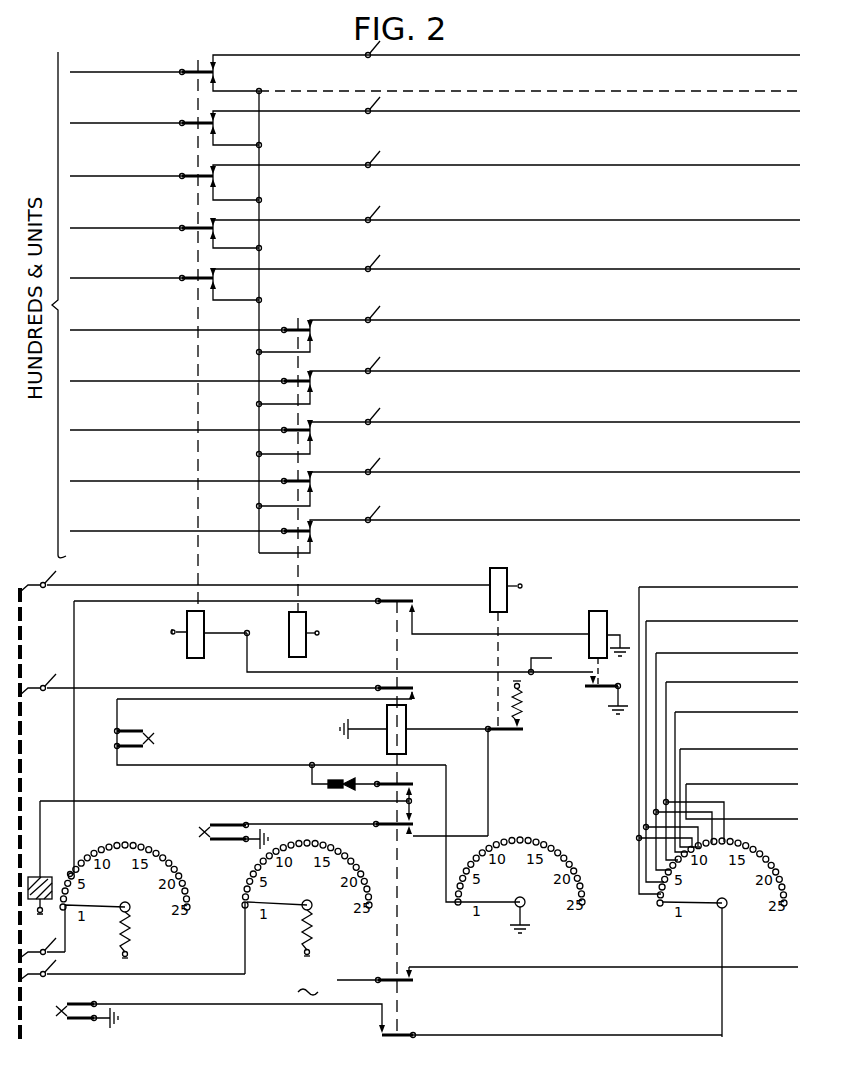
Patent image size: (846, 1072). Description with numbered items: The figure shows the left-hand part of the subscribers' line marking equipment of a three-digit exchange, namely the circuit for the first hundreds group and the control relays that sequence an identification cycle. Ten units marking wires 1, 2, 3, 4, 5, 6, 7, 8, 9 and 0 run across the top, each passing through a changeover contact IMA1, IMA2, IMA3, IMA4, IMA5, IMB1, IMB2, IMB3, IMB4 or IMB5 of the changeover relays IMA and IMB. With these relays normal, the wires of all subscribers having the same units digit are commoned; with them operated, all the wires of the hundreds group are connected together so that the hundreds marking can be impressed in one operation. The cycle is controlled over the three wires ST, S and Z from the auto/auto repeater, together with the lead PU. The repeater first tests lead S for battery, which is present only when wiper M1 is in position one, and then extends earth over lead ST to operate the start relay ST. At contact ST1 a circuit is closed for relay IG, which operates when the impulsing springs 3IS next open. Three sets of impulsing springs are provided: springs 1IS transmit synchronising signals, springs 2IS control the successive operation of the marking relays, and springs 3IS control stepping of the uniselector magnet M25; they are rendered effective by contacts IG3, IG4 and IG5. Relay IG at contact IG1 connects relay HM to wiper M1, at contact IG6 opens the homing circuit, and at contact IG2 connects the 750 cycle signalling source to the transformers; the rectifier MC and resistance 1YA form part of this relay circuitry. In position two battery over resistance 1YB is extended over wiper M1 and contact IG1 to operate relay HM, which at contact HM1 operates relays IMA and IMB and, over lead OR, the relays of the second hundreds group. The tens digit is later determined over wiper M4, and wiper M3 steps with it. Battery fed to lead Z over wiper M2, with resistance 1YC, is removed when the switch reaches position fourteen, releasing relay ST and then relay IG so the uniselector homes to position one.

The units marking wire 1 is at (126, 60).
The units marking wire 2 is at (126, 111).
The units marking wire 3 is at (126, 164).
The units marking wire 4 is at (126, 216).
The units marking wire 5 is at (126, 266).
The units marking wire 6 is at (177, 318).
The units marking wire 7 is at (177, 369).
The units marking wire 8 is at (177, 418).
The units marking wire 9 is at (177, 469).
The units marking wire 0 is at (177, 519).
The changeover contact of relay IMA IMA1 is at (194, 70).
The changeover contact of relay IMA IMA2 is at (194, 122).
The changeover contact of relay IMA IMA3 is at (194, 175).
The changeover contact of relay IMA IMA4 is at (194, 227).
The changeover contact of relay IMA IMA5 is at (194, 277).
The changeover contact of relay IMB IMB1 is at (312, 333).
The changeover contact of relay IMB IMB2 is at (312, 384).
The changeover contact of relay IMB IMB3 is at (312, 433).
The changeover contact of relay IMB IMB4 is at (312, 484).
The changeover contact of relay IMB IMB5 is at (312, 534).
The start relay and start lead ST is at (528, 563).
The PU lead PU is at (199, 680).
The changeover relay IMA is at (187, 644).
The changeover relay IMB is at (306, 649).
The contact IG1 of relay IG IG1 is at (388, 606).
The contact IG2 of relay IG IG2 is at (408, 986).
The contact IG3 of relay IG IG3 is at (374, 822).
The contact IG4 of relay IG IG4 is at (407, 686).
The contact IG5 of relay IG IG5 is at (408, 1033).
The contact IG6 of relay IG IG6 is at (398, 789).
The relay IG is at (406, 735).
The contact ST1 of start relay ST ST1 is at (510, 734).
The resistance 1YA is at (520, 686).
The lead OR is at (552, 658).
The relay HM is at (596, 611).
The contact HM1 of relay HM HM1 is at (598, 694).
The impulsing springs 1IS is at (155, 740).
The impulsing springs 2IS is at (52, 1018).
The impulsing springs 3IS is at (200, 832).
The rectifier MC is at (318, 790).
The uniselector magnet M25 is at (52, 875).
The wiper M1 is at (133, 896).
The wiper M2 is at (322, 896).
The wiper M3 is at (533, 894).
The wiper M4 is at (735, 894).
The resistance 1YB is at (133, 936).
The resistance 1YC is at (310, 936).
The lead S is at (42, 942).
The lead Z is at (132, 980).
The 750 cycle signalling current source 750 is at (337, 979).